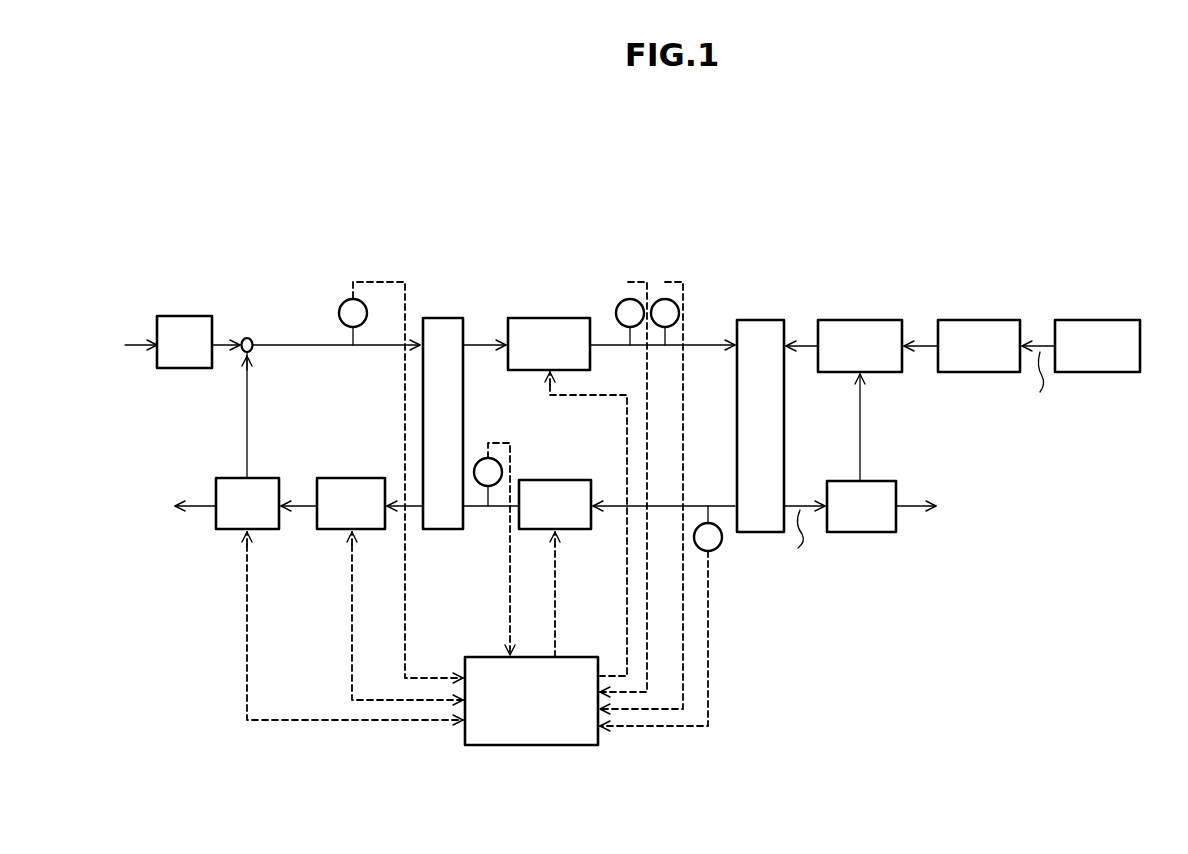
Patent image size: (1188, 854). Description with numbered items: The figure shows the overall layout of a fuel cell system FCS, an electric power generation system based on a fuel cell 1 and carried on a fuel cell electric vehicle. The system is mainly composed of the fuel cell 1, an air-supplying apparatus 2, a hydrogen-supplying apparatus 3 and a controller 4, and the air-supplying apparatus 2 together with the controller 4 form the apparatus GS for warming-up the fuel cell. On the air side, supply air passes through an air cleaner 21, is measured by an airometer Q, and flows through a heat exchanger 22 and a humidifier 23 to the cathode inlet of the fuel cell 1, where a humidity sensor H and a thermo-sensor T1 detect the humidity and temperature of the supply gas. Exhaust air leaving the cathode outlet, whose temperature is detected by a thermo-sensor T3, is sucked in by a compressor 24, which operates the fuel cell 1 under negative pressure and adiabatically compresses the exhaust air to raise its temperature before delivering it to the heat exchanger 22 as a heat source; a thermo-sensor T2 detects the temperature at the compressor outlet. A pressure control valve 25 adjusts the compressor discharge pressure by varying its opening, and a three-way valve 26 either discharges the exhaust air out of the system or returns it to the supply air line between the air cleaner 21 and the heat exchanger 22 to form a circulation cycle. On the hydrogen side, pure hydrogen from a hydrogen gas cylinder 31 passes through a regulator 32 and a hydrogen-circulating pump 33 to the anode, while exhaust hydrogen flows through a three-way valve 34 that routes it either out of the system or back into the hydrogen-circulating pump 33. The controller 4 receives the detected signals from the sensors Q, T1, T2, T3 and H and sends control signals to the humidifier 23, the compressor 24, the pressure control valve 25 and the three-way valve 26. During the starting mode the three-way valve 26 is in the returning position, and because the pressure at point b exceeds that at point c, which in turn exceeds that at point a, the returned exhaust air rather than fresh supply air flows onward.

The fuel cell 1 is at (716, 298).
The air-supplying apparatus 2 is at (557, 180).
The hydrogen-supplying apparatus 3 is at (970, 222).
The controller 4 is at (542, 770).
The air cleaner 21 is at (184, 316).
The heat exchanger 22 is at (448, 316).
The humidifier 23 is at (548, 316).
The compressor 24 is at (555, 480).
The pressure control valve 25 is at (348, 478).
The three-way valve 26 is at (262, 478).
The hydrogen gas cylinder 31 is at (1097, 318).
The regulator 32 is at (983, 318).
The hydrogen-circulating pump 33 is at (862, 318).
The three-way valve 34 is at (865, 532).
The airometer Q is at (350, 298).
The humidity sensor H is at (628, 299).
The thermo-sensor T1 is at (670, 299).
The thermo-sensor T2 is at (489, 458).
The thermo-sensor T3 is at (714, 552).
The point a is at (297, 340).
The point b is at (250, 390).
The point c is at (222, 336).
The fuel cell system FCS is at (836, 206).
The apparatus for warming-up the fuel cell GS is at (768, 634).